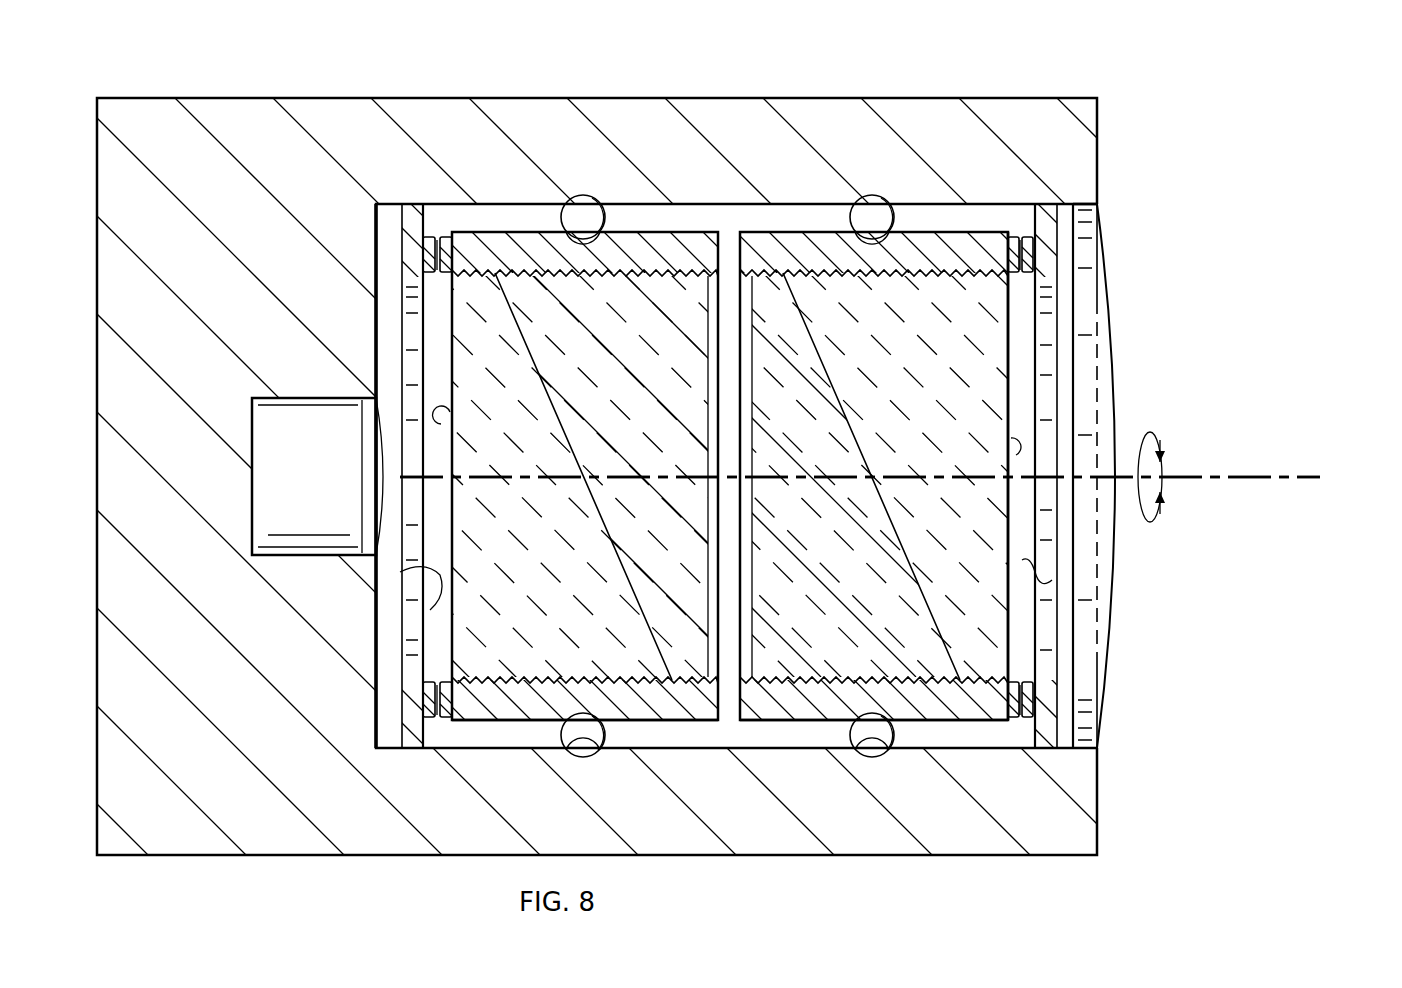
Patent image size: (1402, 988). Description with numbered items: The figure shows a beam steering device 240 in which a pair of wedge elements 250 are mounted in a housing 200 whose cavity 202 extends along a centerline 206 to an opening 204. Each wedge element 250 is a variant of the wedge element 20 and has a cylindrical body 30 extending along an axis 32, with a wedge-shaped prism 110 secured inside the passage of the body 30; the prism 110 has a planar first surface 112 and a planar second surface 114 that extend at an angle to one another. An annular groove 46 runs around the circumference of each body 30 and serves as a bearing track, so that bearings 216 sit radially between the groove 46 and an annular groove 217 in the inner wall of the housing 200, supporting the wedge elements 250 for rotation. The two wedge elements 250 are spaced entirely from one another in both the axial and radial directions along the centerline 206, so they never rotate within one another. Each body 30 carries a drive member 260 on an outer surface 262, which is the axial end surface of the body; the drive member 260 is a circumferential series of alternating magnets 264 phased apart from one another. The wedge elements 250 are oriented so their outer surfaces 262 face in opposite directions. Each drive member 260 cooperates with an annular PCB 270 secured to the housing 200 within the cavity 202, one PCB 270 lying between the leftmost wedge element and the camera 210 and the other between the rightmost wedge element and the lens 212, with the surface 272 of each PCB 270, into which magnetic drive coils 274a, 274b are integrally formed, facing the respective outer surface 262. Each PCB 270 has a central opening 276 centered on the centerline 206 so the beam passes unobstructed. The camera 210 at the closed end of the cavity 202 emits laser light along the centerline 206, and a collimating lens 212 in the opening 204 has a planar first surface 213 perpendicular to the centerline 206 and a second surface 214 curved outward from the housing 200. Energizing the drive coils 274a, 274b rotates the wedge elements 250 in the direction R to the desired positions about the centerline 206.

The housing 200 is at (594, 80).
The beam steering device 240 is at (1305, 221).
The camera 210 is at (295, 486).
The wedge-shaped prism 110 is at (622, 401).
The first surface 112 is at (708, 545).
The second surface 114 is at (611, 543).
The wedge element 20 is at (639, 226).
The cylindrical body 30 is at (522, 712).
The annular groove 46 is at (573, 276).
The bearings 216 is at (561, 221).
The annular groove 217 is at (600, 757).
The wedge element 250 is at (656, 735).
The magnets 264 is at (444, 236).
The magnetic drive coil 274a is at (436, 668).
The magnetic drive coil 274b is at (428, 274).
The outer surface 262 is at (450, 412).
The PCB 270 is at (430, 540).
The central opening 276 is at (421, 498).
The surface 272 is at (400, 572).
The first surface 213 is at (1074, 378).
The cavity 202 is at (1067, 303).
The collimating lens 212 is at (1114, 272).
The second surface 214 is at (1117, 366).
The opening 204 is at (1107, 207).
The drive member 260 is at (1016, 613).
The direction of rotation R is at (1158, 428).
The axis 32 is at (1273, 476).
The centerline 206 is at (1273, 476).